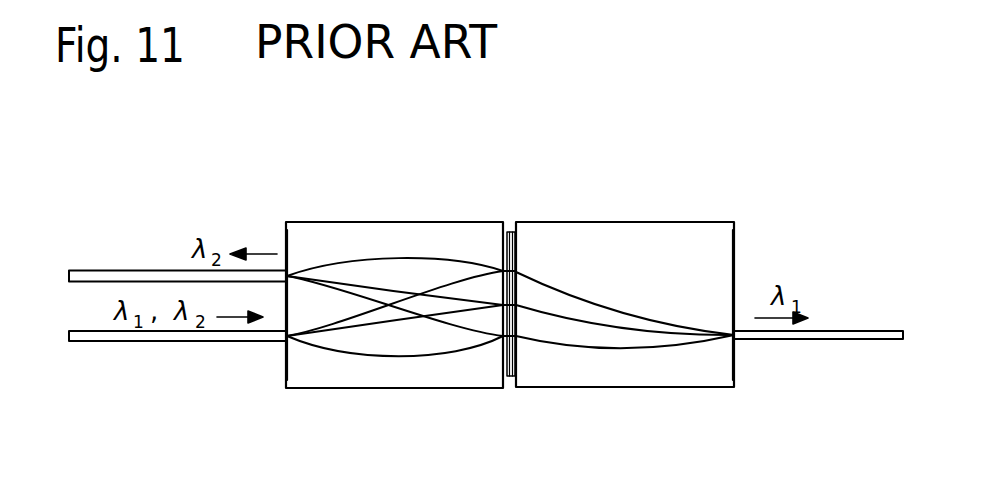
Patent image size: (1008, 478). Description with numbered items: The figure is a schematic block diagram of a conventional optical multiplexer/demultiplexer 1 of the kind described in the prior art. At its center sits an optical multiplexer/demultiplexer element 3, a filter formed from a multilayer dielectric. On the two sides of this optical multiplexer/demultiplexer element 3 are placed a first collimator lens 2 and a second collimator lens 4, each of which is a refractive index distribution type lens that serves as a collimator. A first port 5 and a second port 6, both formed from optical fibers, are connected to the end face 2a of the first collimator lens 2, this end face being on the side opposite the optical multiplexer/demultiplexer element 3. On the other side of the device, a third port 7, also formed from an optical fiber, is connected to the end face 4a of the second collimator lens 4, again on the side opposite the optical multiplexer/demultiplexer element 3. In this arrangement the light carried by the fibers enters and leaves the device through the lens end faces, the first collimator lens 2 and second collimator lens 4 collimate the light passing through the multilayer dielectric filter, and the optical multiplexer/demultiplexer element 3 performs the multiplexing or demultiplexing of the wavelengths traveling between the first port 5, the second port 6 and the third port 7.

The optical multiplexer/demultiplexer 1 is at (510, 277).
The first collimator lens 2 is at (388, 375).
The end face of the first collimator lens 2a is at (287, 245).
The optical multiplexer/demultiplexer element 3 is at (513, 378).
The second collimator lens 4 is at (586, 380).
The end face of the second collimator lens 4a is at (733, 367).
The first port 5 is at (156, 345).
The second port 6 is at (137, 268).
The third port 7 is at (845, 343).